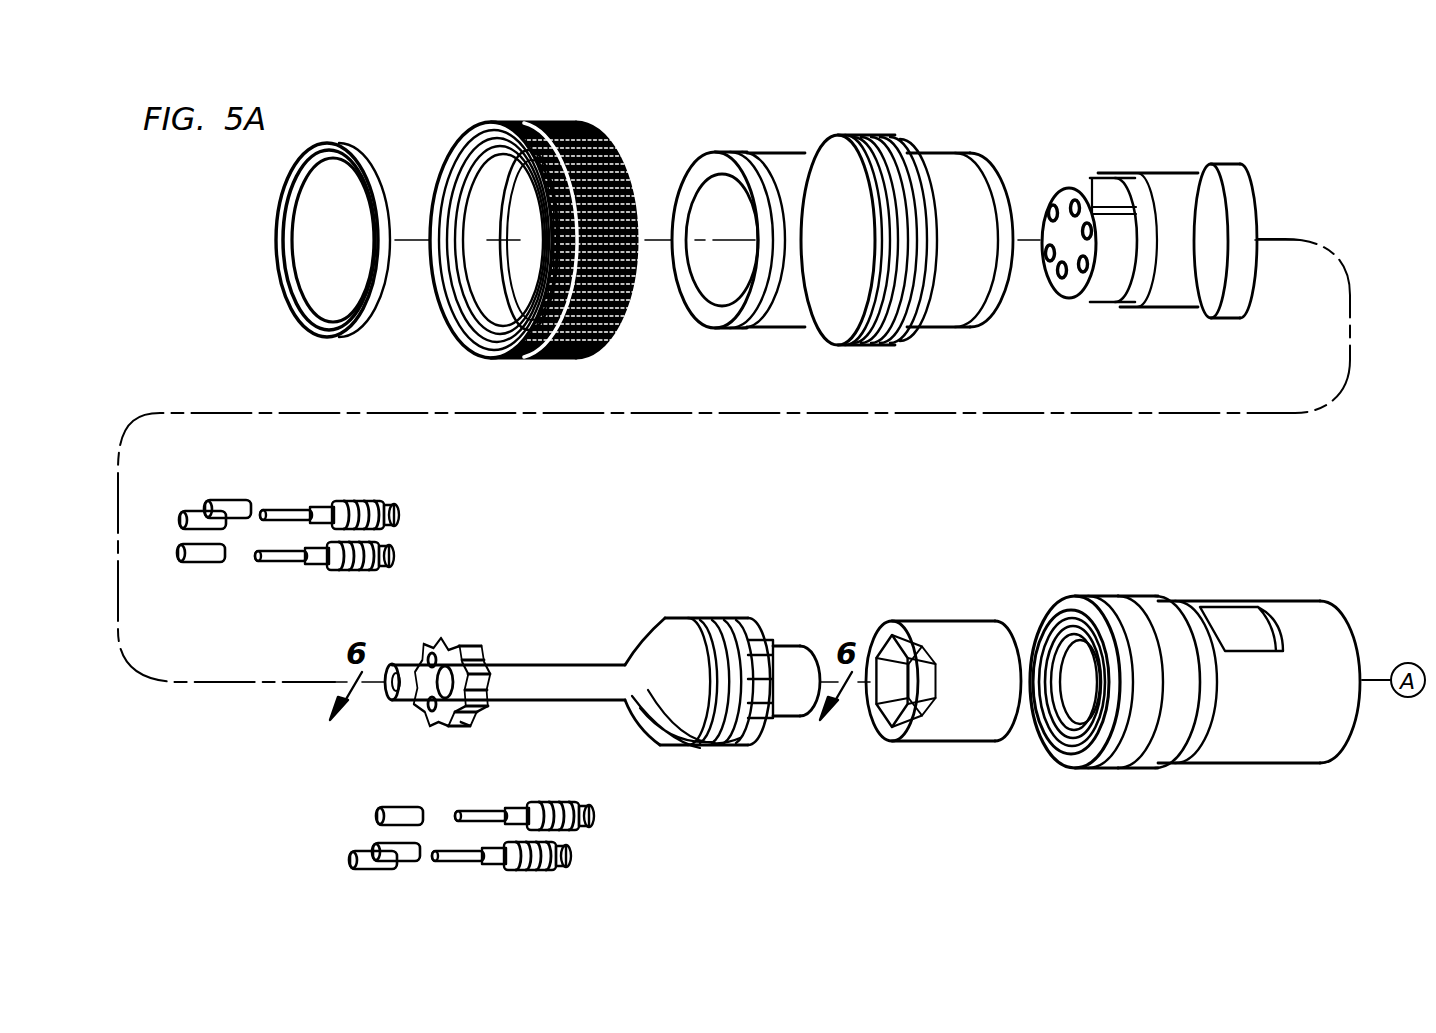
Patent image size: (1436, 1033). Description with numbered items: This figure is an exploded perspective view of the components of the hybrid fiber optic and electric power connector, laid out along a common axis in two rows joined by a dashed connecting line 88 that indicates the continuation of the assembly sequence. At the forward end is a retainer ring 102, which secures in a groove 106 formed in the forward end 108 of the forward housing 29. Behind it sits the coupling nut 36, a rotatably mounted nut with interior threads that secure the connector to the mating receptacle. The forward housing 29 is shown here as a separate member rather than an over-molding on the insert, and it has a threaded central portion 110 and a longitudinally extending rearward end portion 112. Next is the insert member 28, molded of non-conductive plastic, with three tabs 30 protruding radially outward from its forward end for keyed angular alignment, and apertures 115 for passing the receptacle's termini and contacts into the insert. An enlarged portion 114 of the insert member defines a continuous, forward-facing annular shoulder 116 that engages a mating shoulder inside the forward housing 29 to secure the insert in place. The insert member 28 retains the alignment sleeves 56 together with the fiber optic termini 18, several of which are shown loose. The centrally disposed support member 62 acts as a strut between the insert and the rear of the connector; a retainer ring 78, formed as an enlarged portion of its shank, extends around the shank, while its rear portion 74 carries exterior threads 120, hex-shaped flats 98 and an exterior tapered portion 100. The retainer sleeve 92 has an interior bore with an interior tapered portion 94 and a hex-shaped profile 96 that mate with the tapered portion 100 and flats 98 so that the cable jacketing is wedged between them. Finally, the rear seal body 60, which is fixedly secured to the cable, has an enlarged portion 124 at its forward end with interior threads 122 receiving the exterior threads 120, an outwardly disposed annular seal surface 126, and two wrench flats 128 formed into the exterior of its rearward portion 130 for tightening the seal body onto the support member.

The retainer ring 102 is at (340, 150).
The coupling nut 36 is at (575, 125).
The forward housing 29 is at (851, 215).
The groove 106 is at (760, 160).
The forward end 108 is at (785, 160).
The threaded central portion 110 is at (848, 138).
The rearward end portion 112 is at (965, 162).
The insert member 28 is at (1171, 211).
The tabs 30 is at (1070, 201).
The apertures 115 is at (1062, 196).
The annular-shaped shoulder 116 is at (1200, 166).
The enlarged portion 114 is at (1235, 188).
The cable/assembly boundary line 88 is at (1170, 416).
The alignment sleeves 56 is at (222, 503).
The termini 18 is at (396, 500).
The retainer ring 78 is at (472, 642).
The support member 62 is at (533, 700).
The rear portion 74 is at (753, 689).
The exterior threads 120 is at (702, 622).
The hex-shaped flats 98 is at (770, 716).
The exterior tapered portion 100 is at (790, 648).
The retainer sleeve 92 is at (941, 708).
The interior tapered portion 94 is at (920, 668).
The hex-shaped profile 96 is at (895, 715).
The rear seal body 60 is at (1196, 682).
The interior threads 122 is at (1052, 632).
The enlarged portion 124 is at (1190, 764).
The seal surface 126 is at (1150, 600).
The flats 128 is at (1228, 618).
The rearward portion 130 is at (1290, 754).